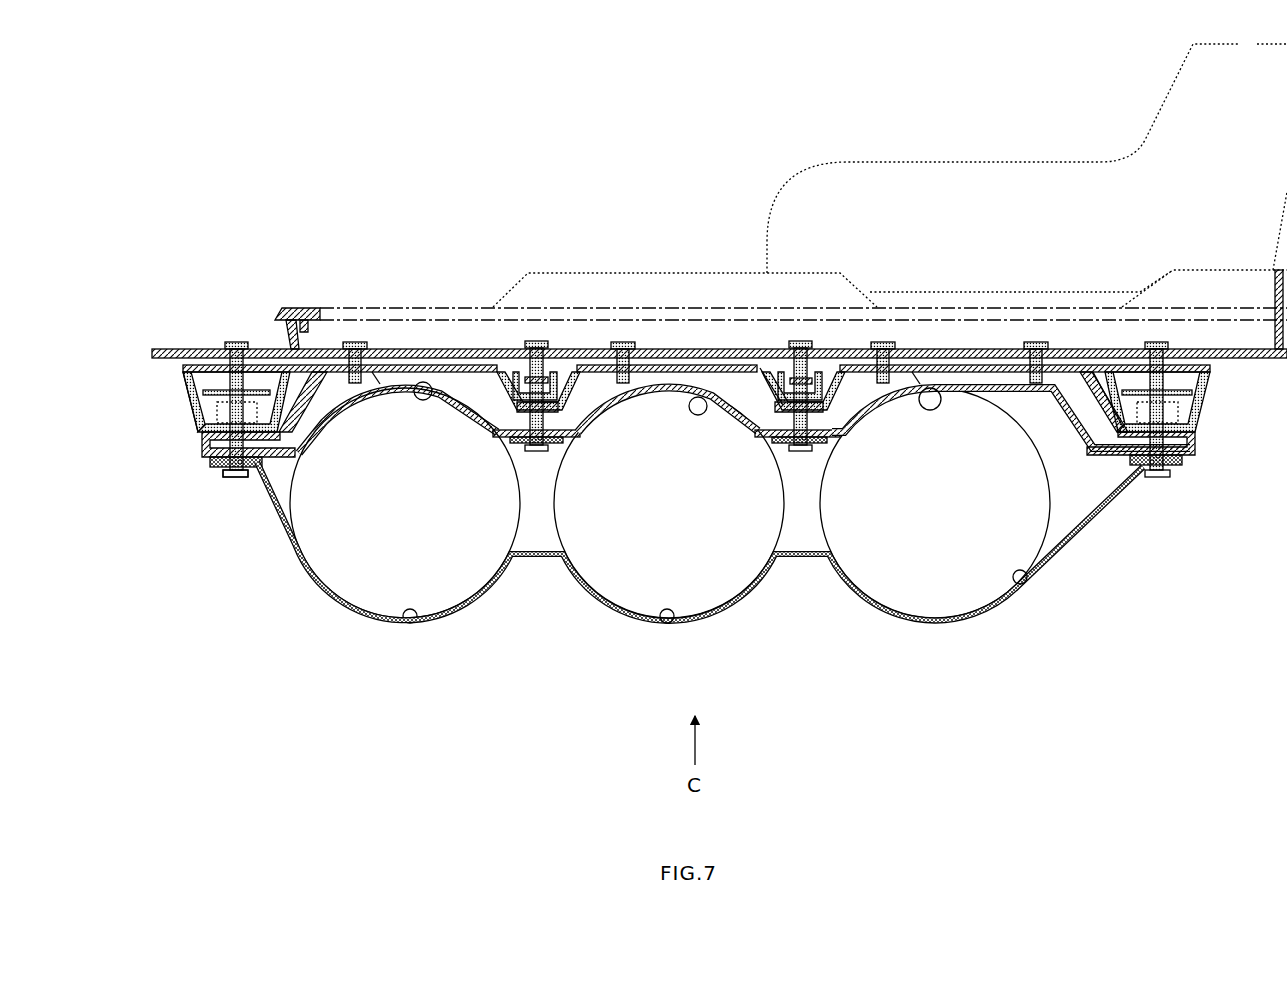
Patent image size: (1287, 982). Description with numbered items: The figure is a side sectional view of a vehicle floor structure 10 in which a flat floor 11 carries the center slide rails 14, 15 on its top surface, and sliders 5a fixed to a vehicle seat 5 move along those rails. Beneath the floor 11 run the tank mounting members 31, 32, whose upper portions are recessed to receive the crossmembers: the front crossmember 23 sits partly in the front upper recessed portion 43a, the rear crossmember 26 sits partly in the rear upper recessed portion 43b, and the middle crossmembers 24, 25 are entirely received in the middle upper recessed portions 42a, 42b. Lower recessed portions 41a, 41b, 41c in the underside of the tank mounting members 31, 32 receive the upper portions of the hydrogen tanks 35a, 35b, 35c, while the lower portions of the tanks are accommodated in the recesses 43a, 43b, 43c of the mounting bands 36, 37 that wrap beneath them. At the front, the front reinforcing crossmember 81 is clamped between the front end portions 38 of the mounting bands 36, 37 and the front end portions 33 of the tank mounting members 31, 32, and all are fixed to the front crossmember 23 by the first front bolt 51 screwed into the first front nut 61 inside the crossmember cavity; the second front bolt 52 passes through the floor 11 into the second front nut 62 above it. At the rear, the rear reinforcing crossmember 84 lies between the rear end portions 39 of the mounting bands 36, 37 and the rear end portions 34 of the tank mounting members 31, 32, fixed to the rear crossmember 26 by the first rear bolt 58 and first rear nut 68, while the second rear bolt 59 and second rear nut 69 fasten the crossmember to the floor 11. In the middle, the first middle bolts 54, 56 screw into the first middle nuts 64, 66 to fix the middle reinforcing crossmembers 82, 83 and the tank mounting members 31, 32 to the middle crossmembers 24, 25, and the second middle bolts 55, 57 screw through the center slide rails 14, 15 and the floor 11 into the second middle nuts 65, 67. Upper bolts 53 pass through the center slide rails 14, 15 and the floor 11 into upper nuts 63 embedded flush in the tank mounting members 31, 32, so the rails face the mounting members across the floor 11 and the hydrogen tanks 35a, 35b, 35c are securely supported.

The vehicle seat 5 is at (1047, 162).
The slider 5a is at (555, 273).
The vehicle floor structure 10 is at (219, 171).
The floor 11 is at (160, 352).
The left center slide rail 14 is at (330, 281).
The right center slide rail 15 is at (343, 304).
The front crossmember 23 is at (192, 378).
The middle crossmember 24 is at (590, 366).
The middle crossmember 25 is at (843, 405).
The rear crossmember 26 is at (1180, 393).
The tank mounting member 31 is at (685, 304).
The tank mounting member 32 is at (700, 397).
The front end portion of tank mounting member 33 is at (204, 440).
The rear end portion of tank mounting member 34 is at (1178, 448).
The hydrogen tank 35a is at (372, 597).
The hydrogen tank 35b is at (628, 597).
The hydrogen tank 35c is at (943, 605).
The mounting band 36 is at (679, 541).
The mounting band 37 is at (279, 540).
The front end portion of mounting band 38 is at (220, 470).
The rear end portion of mounting band 39 is at (1172, 477).
The lower recessed portion 41a is at (426, 384).
The lower recessed portion 41b is at (712, 400).
The lower recessed portion 41c is at (935, 390).
The middle upper recessed portion 42a is at (510, 380).
The middle upper recessed portion 42b is at (768, 385).
The front upper recessed portion 43a is at (299, 388).
The rear upper recessed portion 43b is at (1100, 385).
The recess of mounting band 43c is at (1033, 570).
The first front bolt 51 is at (238, 480).
The second front bolt 52 is at (237, 344).
The upper bolt 53 is at (356, 345).
The first middle bolt 54 is at (536, 452).
The second middle bolt 55 is at (536, 377).
The first middle bolt 56 is at (800, 452).
The second middle bolt 57 is at (801, 378).
The first rear bolt 58 is at (1157, 480).
The second rear bolt 59 is at (1157, 342).
The first front nut 61 is at (210, 393).
The second front nut 62 is at (208, 377).
The upper nut 63 is at (376, 367).
The first middle nut 64 is at (494, 431).
The second middle nut 65 is at (552, 380).
The first middle nut 66 is at (840, 434).
The second middle nut 67 is at (816, 395).
The first rear nut 68 is at (1172, 413).
The second rear nut 69 is at (1178, 375).
The front reinforcing crossmember 81 is at (214, 462).
The middle reinforcing crossmember 82 is at (511, 443).
The middle reinforcing crossmember 83 is at (826, 443).
The rear reinforcing crossmember 84 is at (1182, 465).